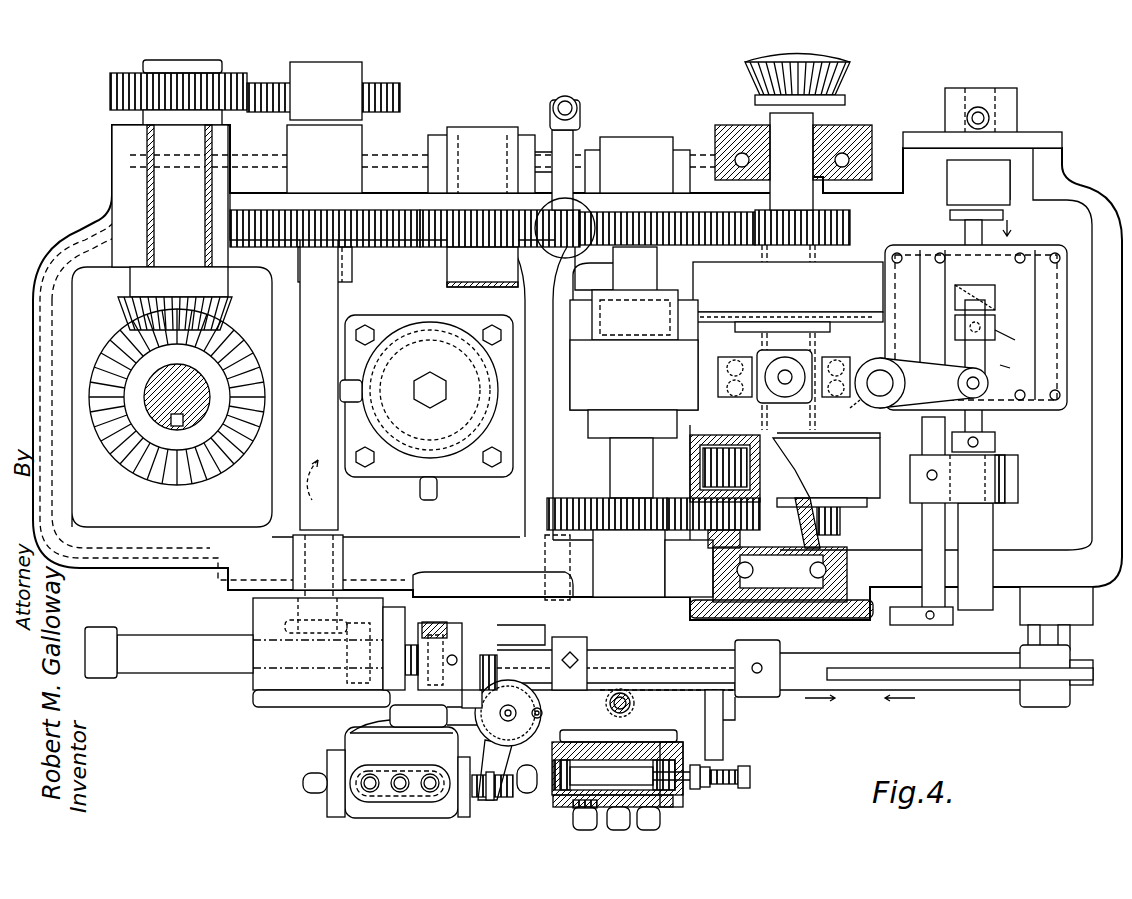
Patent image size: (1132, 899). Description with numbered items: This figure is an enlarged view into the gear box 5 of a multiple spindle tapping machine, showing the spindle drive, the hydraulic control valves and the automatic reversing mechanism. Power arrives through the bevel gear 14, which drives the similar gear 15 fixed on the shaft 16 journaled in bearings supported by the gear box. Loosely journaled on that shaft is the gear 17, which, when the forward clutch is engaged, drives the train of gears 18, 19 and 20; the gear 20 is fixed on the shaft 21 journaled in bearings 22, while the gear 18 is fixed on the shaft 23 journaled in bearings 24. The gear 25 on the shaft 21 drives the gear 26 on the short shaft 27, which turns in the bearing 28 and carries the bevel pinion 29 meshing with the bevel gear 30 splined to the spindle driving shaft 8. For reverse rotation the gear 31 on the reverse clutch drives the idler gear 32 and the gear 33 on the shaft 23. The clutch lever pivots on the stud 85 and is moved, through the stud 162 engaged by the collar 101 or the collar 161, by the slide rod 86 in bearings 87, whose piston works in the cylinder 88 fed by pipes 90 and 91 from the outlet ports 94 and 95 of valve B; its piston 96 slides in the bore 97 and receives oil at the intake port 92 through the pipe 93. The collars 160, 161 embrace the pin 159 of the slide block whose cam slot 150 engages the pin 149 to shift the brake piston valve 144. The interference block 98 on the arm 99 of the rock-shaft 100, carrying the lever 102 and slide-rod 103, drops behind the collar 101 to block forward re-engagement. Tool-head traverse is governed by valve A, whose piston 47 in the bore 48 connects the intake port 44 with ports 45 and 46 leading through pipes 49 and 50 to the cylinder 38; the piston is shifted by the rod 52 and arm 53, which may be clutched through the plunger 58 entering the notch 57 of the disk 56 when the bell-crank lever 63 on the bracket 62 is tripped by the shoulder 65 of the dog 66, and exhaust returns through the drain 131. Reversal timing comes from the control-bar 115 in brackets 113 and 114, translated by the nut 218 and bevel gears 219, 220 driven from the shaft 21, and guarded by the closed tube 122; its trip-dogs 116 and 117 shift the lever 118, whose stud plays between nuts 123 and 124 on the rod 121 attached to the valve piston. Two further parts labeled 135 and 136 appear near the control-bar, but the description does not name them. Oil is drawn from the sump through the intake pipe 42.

The gear box 5 is at (33, 300).
The power driven shaft 8 is at (205, 387).
The bevel gear 14 is at (838, 85).
The bevel gear 15 is at (840, 104).
The shaft 16 is at (788, 271).
The gear 17 is at (850, 218).
The gear 18 is at (640, 212).
The gear 19 is at (478, 210).
The gear 20 is at (325, 220).
The shaft 21 is at (338, 512).
The bearings 22 is at (350, 565).
The shaft 23 is at (631, 468).
The bearings 24 is at (612, 147).
The gear 25 is at (400, 97).
The gear 26 is at (110, 100).
The short shaft 27 is at (170, 203).
The bearing 28 is at (147, 193).
The bevel pinion 29 is at (228, 305).
The bevel gear 30 is at (212, 468).
The gear 31 is at (840, 527).
The idler gear 32 is at (700, 540).
The gear 33 is at (650, 535).
The cylinder 38 is at (468, 477).
The intake pipe 42 is at (552, 135).
The intake port 44 is at (400, 792).
The exhaust port 45 is at (365, 792).
The exhaust port 46 is at (432, 792).
The sliding piston 47 is at (405, 770).
The bore 48 is at (378, 770).
The pipe 49 is at (345, 382).
The pipe 50 is at (420, 492).
The rod 52 is at (490, 800).
The arm 53 is at (528, 736).
The disk-like head 56 is at (520, 685).
The notch 57 is at (542, 710).
The spring pressed plunger 58 is at (542, 715).
The bracket 62 is at (390, 716).
The bell-crank lever 63 is at (506, 706).
The shoulder 65 is at (457, 665).
The movable dog 66 is at (445, 622).
The stud 85 is at (880, 383).
The slide rod 86 is at (982, 425).
The bearings 87 is at (1035, 158).
The cylinder 88 is at (945, 100).
The fluid pressure pipe 90 is at (573, 830).
The fluid pressure pipe 91 is at (967, 118).
The intake port 92 is at (585, 830).
The pipe 93 is at (618, 830).
The outlet port 94 is at (560, 805).
The outlet port 95 is at (672, 830).
The cylindrical piston 96 is at (626, 775).
The bore 97 is at (618, 735).
The interference block 98 is at (1018, 465).
The arm 99 is at (1018, 483).
The rock-shaft 100 is at (922, 428).
The collar 101 is at (995, 445).
The lever 102 is at (902, 625).
The slide-rod 103 is at (630, 712).
The bracket 113 is at (292, 700).
The bracket 114 is at (1048, 707).
The control-bar 115 is at (795, 670).
The trip-dog 116 is at (780, 645).
The trip-dog 117 is at (585, 645).
The lever 118 is at (723, 720).
The rod 121 is at (745, 775).
The closed tube 122 is at (169, 652).
The nut 123 is at (698, 789).
The nut 124 is at (750, 785).
The drain pipe 131 is at (545, 618).
The slot 135 is at (655, 672).
The pin 136 is at (630, 703).
The piston valve 144 is at (625, 300).
The pin 149 is at (965, 340).
The cam slot 150 is at (1011, 369).
The pin 159 is at (995, 305).
The collar 160 is at (995, 293).
The collar 161 is at (1009, 346).
The stud 162 is at (958, 392).
The nut 218 is at (361, 644).
The bevel gear 219 is at (318, 654).
The bevel gear 220 is at (302, 615).